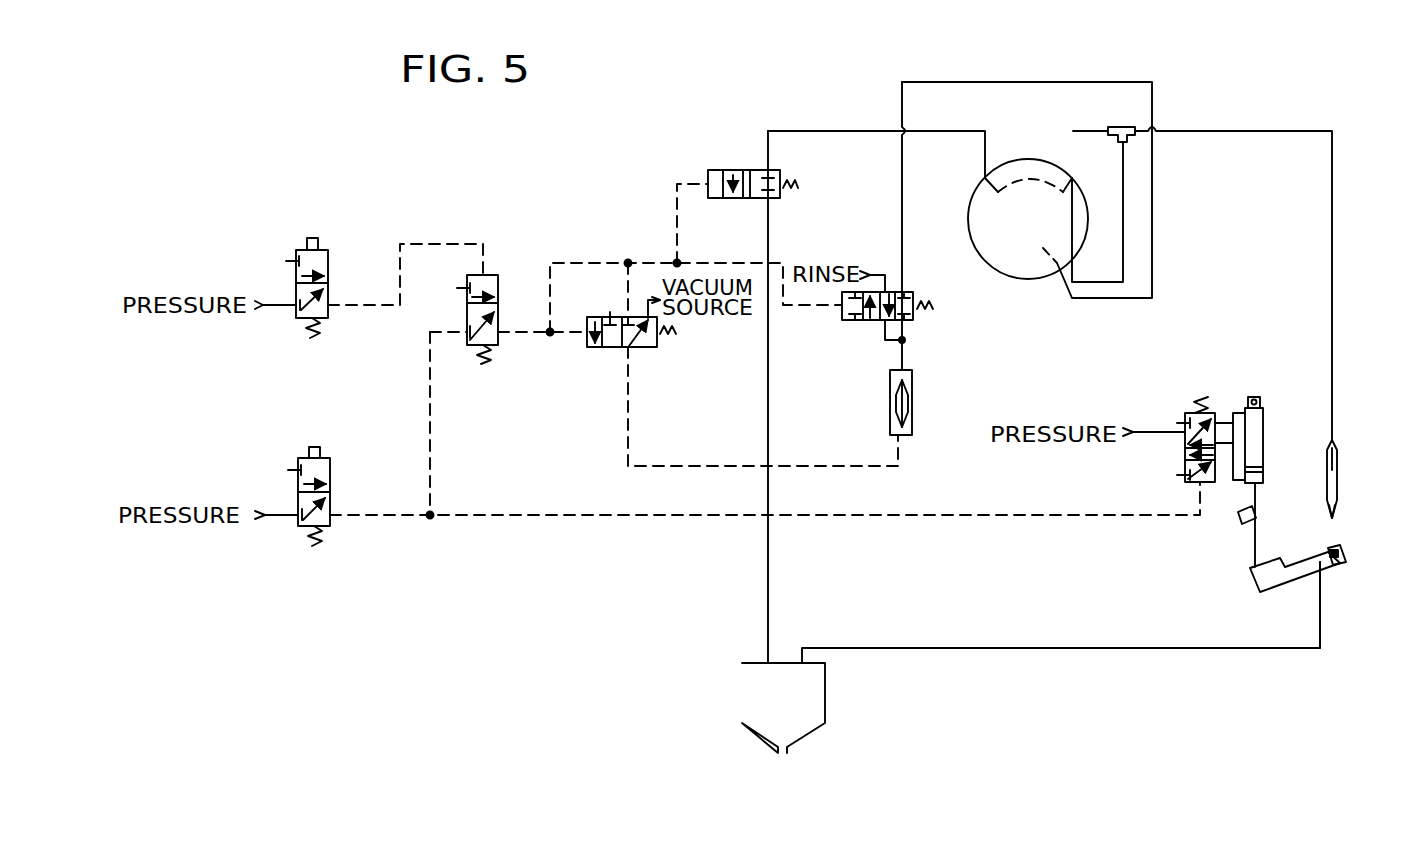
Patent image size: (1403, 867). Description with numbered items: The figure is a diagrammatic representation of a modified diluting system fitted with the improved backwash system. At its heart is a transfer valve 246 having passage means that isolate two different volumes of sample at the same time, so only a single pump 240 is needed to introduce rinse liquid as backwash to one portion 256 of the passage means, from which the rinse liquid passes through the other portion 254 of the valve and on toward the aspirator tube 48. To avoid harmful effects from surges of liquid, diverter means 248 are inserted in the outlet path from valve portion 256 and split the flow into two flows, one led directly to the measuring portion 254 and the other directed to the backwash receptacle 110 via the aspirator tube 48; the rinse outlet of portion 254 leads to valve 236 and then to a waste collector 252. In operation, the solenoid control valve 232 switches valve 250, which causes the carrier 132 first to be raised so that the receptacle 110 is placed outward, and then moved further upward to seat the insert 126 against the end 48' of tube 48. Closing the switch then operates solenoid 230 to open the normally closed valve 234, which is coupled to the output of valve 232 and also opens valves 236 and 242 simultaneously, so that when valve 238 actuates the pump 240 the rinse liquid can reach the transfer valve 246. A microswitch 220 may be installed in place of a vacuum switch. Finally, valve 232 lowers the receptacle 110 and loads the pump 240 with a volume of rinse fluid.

The aspirator tube 48 is at (1357, 479).
The end of tube 48' is at (1360, 513).
The backwash receptacle 110 is at (1343, 567).
The insert 126 is at (1330, 552).
The carrier 132 is at (1282, 592).
The microswitch 220 is at (1243, 517).
The solenoid 230 is at (327, 250).
The solenoid control valve 232 is at (327, 452).
The normally closed valve 234 is at (498, 275).
The valve 236 is at (720, 170).
The valve 238 is at (590, 347).
The pump 240 is at (912, 370).
The valve 242 is at (913, 320).
The transfer valve 246 is at (980, 261).
The diverter means 248 is at (1122, 125).
The valve 250 is at (1187, 413).
The waste collector 252 is at (748, 663).
The other portion of passage means 254 is at (1027, 185).
The one portion of passage means 256 is at (1031, 243).